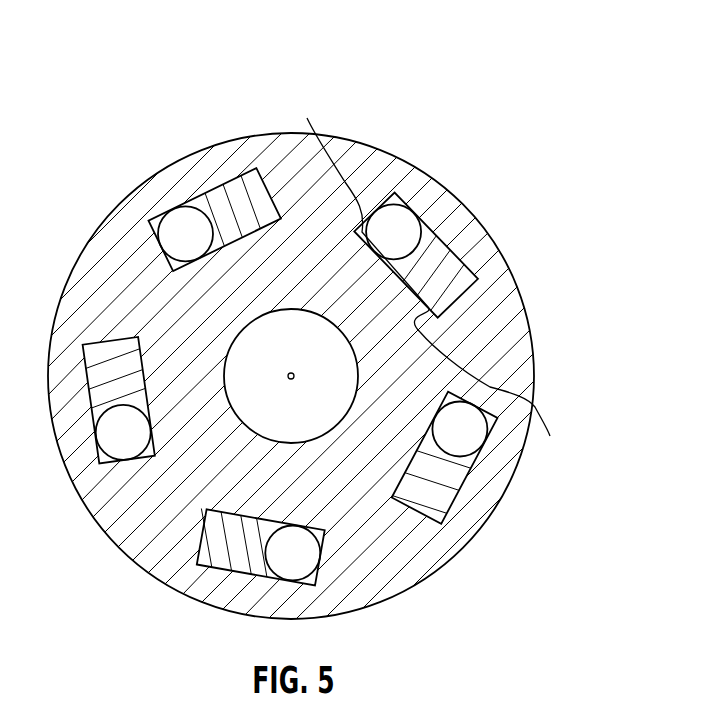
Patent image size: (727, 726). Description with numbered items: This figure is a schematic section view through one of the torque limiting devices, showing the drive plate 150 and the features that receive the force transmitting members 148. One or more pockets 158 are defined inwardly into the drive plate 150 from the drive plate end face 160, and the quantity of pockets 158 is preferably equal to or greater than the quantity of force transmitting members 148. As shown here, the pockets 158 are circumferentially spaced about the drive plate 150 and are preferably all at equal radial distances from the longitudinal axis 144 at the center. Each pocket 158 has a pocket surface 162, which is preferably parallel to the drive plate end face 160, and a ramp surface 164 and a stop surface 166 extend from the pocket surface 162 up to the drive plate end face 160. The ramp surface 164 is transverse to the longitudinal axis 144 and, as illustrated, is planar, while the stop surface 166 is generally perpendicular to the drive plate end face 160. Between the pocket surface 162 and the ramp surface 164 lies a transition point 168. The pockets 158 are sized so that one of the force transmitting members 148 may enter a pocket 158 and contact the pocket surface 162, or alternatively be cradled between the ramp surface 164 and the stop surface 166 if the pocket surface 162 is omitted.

The longitudinal axis 144 is at (288, 376).
The force transmitting members 148 is at (408, 212).
The drive plate 150 is at (466, 255).
The pockets 158 is at (497, 400).
The drive plate end face 160 is at (512, 360).
The pocket surface 162 is at (357, 206).
The ramp surface 164 is at (447, 272).
The stop surface 166 is at (402, 223).
The transition point 168 is at (458, 240).